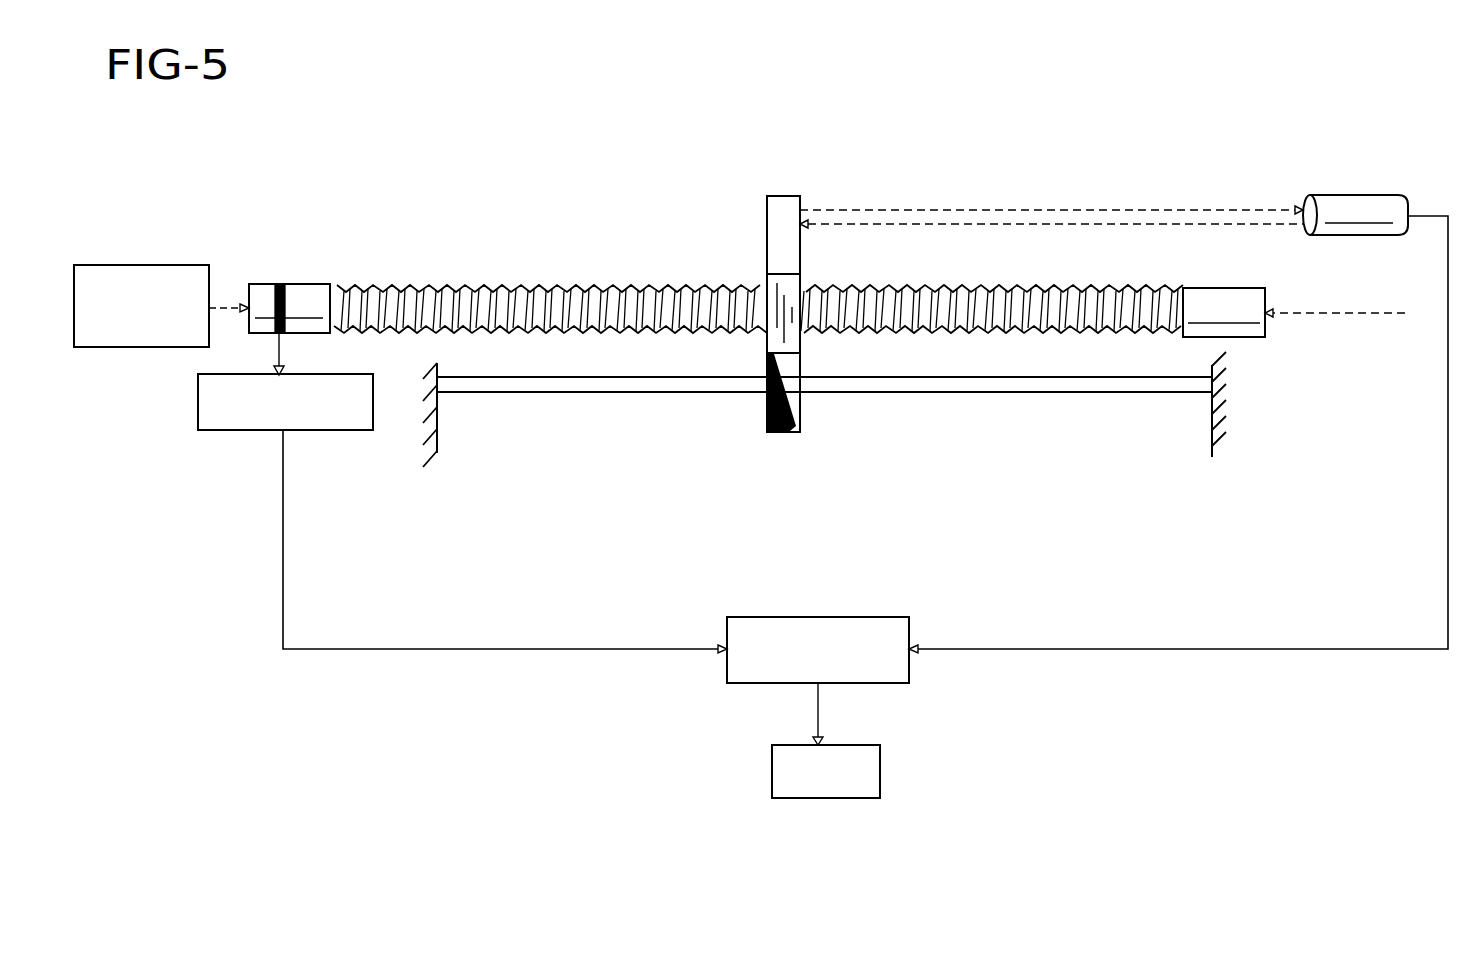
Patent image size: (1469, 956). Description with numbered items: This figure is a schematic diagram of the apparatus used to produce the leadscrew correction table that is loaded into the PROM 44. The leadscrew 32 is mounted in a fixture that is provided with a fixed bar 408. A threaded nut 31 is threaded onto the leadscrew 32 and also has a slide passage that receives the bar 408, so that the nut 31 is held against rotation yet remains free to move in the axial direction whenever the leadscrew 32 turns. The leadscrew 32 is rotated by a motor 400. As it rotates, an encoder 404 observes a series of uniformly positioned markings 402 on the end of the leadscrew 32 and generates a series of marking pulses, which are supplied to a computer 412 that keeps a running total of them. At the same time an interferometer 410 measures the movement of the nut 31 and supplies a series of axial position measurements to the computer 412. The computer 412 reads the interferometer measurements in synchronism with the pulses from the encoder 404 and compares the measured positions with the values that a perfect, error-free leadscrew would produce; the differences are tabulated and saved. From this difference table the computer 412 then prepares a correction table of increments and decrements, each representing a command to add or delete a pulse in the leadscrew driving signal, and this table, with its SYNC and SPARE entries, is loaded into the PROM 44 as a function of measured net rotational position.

The motor 400 is at (128, 265).
The uniformly positioned markings 402 is at (280, 285).
The encoder 404 is at (233, 430).
The leadscrew 32 is at (468, 284).
The threaded nut 31 is at (793, 190).
The fixed bar 408 is at (918, 395).
The interferometer 410 is at (1350, 195).
The computer 412 is at (840, 617).
The PROM 44 is at (880, 798).